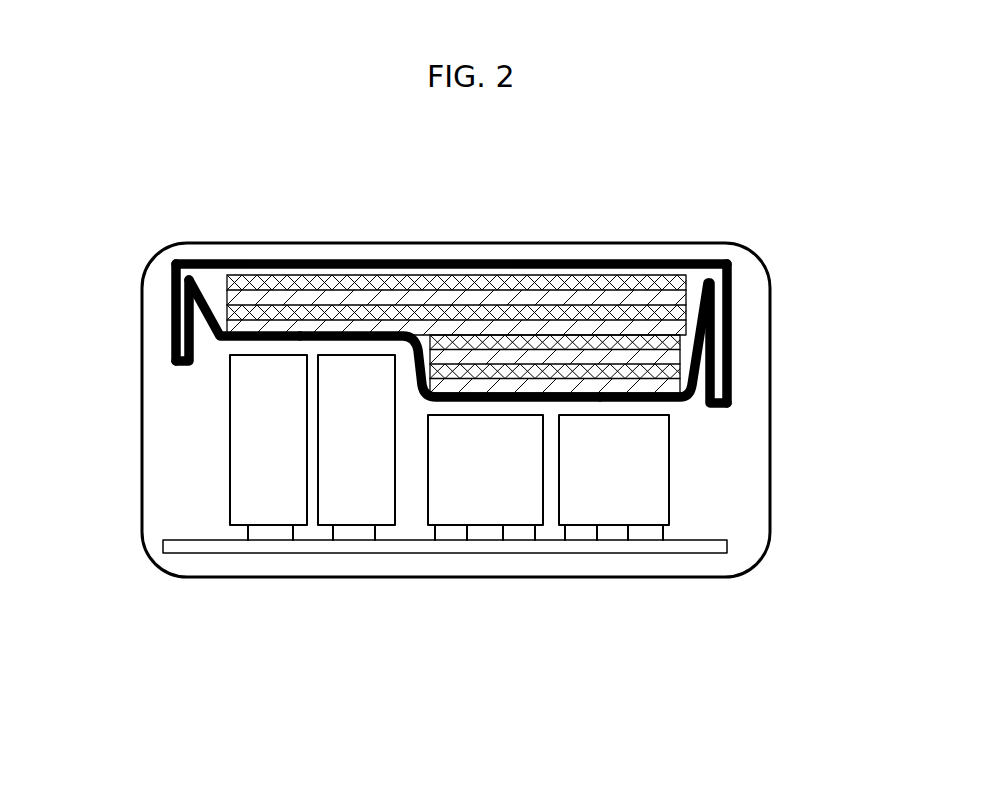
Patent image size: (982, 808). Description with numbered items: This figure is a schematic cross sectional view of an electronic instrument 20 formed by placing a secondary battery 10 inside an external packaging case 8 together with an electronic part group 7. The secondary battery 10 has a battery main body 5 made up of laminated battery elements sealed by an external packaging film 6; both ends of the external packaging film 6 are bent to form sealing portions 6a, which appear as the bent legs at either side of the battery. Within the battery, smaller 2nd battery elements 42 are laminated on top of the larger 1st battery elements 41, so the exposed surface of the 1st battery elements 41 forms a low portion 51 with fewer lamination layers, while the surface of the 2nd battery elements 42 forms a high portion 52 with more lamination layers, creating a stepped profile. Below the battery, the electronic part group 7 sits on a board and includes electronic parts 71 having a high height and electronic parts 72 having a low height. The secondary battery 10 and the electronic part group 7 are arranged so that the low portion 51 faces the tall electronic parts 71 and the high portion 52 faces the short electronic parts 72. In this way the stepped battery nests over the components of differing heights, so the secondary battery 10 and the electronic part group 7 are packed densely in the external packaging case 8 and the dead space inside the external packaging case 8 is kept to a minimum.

The electronic instrument 20 is at (375, 219).
The external packaging case 8 is at (558, 245).
The external packaging film 6 is at (637, 262).
The sealing portions 6a is at (172, 312).
The battery main body 5 is at (456, 300).
The secondary battery 10 is at (210, 250).
The 1st battery elements 41 is at (680, 353).
The 2nd battery elements 42 is at (686, 292).
The low portion 51 is at (228, 338).
The high portion 52 is at (667, 407).
The electronic part group 7 is at (702, 485).
The electronic parts having a high height 71 is at (268, 507).
The electronic parts having a low height 72 is at (485, 507).